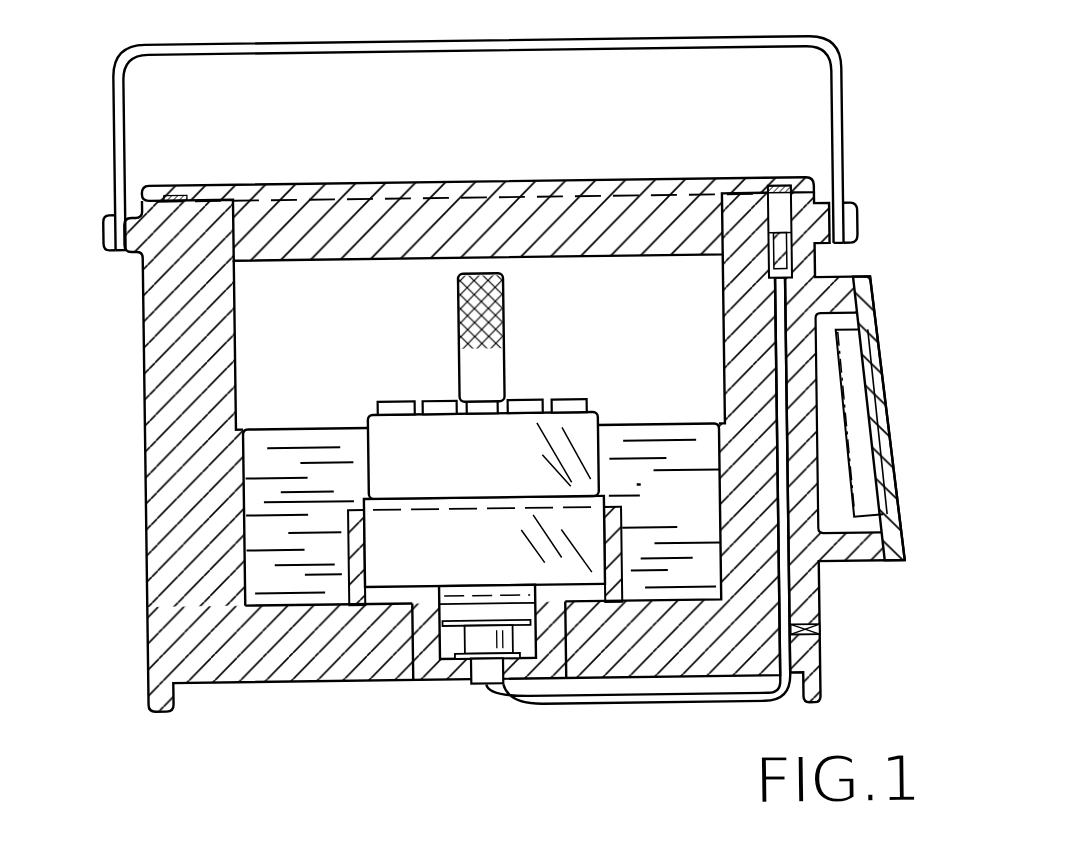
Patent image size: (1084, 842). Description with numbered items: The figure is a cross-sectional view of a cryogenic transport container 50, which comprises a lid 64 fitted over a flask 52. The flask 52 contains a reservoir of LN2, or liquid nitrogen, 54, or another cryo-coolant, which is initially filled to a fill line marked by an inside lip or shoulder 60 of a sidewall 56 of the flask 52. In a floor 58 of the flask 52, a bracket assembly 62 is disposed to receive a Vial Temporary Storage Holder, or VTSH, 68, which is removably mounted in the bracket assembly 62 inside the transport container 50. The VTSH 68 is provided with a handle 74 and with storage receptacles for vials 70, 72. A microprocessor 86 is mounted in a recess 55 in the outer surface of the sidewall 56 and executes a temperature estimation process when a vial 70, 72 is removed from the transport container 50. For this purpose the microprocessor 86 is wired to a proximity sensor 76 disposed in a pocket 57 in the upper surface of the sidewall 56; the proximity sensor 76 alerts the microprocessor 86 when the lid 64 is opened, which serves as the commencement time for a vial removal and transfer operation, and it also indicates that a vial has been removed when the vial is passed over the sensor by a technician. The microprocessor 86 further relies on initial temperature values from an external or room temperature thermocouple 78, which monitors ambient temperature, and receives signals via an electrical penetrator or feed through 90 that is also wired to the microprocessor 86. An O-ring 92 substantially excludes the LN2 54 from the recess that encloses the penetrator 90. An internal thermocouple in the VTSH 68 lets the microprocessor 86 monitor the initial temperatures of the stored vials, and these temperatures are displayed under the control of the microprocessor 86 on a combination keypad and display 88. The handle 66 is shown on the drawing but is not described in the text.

The cryogenic transport container 50 is at (886, 186).
The flask 52 is at (133, 425).
The LN2 (liquid nitrogen) 54 is at (635, 422).
The recess 55 is at (838, 490).
The sidewall 56 is at (172, 330).
The pocket 57 is at (766, 262).
The floor 58 is at (295, 668).
The inside lip or shoulder 60 is at (248, 427).
The bracket assembly 62 is at (428, 687).
The lid 64 is at (400, 187).
The handle 66 is at (621, 52).
The Vial Temporary Storage Holder (VTSH) 68 is at (416, 334).
The vial 70 is at (521, 394).
The vial 72 is at (583, 394).
The handle 74 is at (507, 322).
The proximity sensor 76 is at (747, 185).
The external or room temperature thermocouple 78 is at (817, 630).
The microprocessor 86 is at (853, 358).
The combination keypad and display 88 is at (897, 438).
The electrical penetrator or feed through 90 is at (474, 686).
The O-ring 92 is at (460, 593).